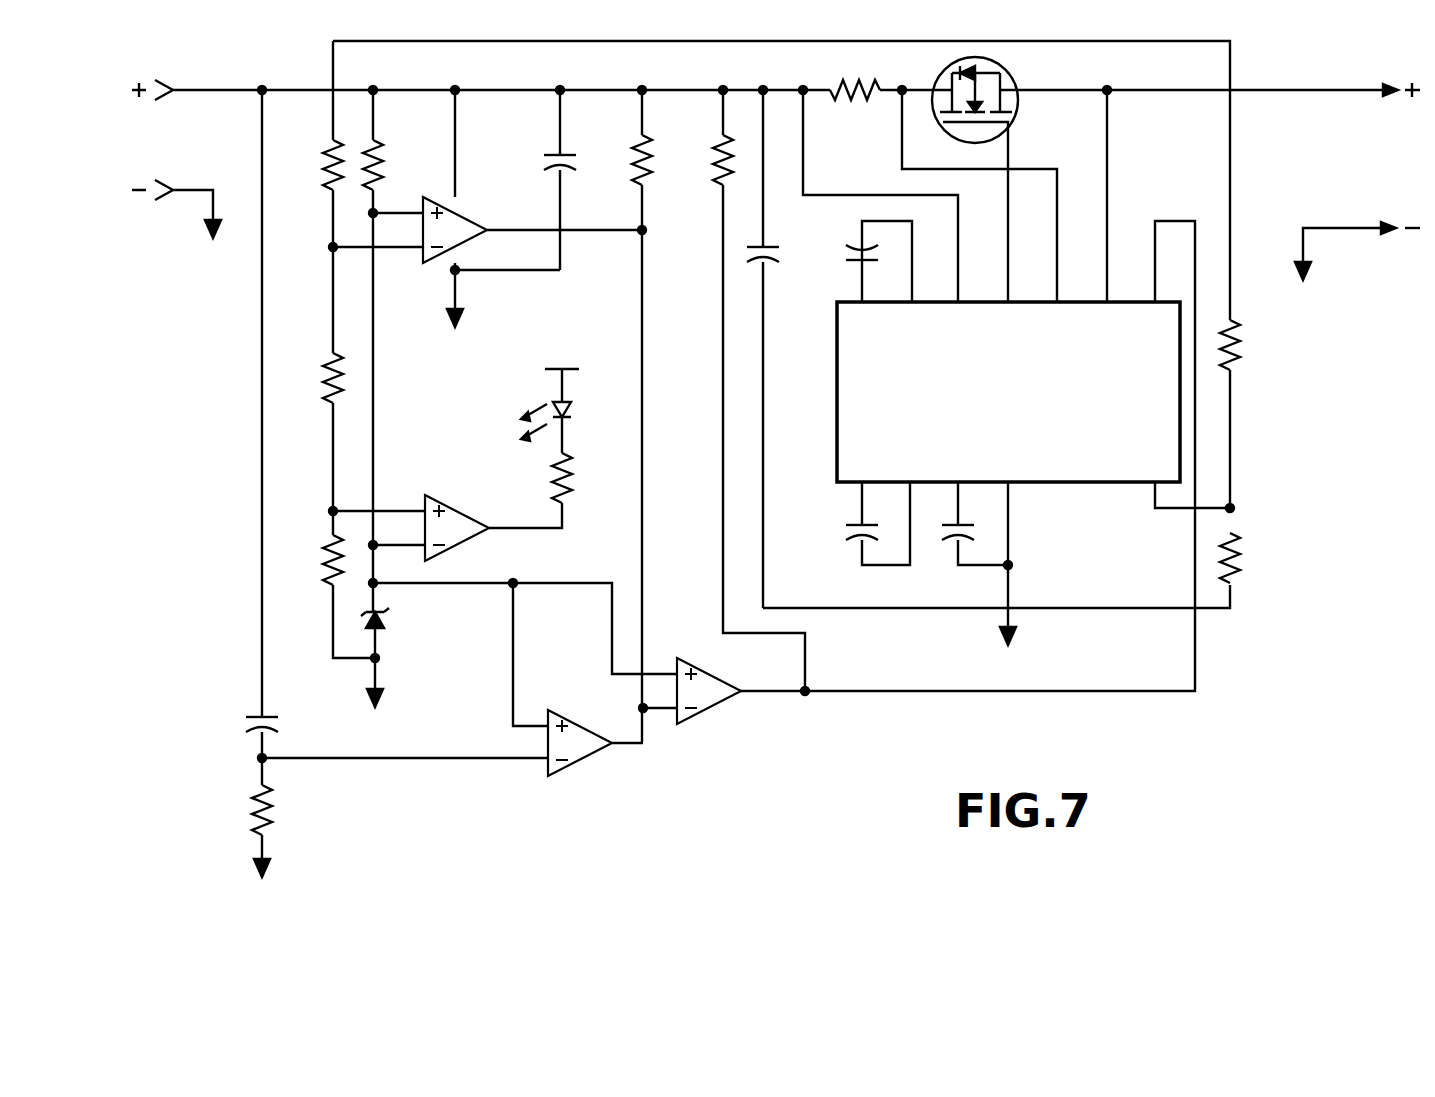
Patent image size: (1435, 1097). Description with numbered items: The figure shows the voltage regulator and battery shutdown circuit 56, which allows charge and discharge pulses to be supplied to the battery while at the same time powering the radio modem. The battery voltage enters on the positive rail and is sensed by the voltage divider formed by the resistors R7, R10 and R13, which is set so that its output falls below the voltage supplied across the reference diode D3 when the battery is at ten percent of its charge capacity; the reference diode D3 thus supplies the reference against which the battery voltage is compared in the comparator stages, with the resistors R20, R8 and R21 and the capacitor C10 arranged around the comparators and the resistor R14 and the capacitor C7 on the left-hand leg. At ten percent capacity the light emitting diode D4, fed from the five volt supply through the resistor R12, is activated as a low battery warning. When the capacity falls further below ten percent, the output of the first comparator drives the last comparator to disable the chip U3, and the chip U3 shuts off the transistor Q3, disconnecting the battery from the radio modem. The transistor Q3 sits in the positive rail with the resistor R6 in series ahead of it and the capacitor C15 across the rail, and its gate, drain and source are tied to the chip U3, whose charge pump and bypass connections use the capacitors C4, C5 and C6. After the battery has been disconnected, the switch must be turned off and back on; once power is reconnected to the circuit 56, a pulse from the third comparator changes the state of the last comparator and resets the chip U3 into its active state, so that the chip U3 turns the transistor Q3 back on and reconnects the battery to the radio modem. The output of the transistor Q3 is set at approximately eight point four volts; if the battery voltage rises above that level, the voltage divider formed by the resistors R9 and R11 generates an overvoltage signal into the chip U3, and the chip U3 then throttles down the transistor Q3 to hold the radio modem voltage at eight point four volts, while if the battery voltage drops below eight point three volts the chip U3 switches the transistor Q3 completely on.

The voltage regulator and battery shutdown circuit 56 is at (777, 474).
The resistor R6 is at (855, 78).
The voltage divider resistor R7 is at (315, 165).
The resistor R8 is at (624, 160).
The voltage divider resistor R9 is at (1246, 345).
The voltage divider resistor R10 is at (310, 378).
The voltage divider resistor R11 is at (1253, 558).
The resistor R12 is at (585, 478).
The voltage divider resistor R13 is at (310, 560).
The resistor R14 is at (239, 810).
The resistor R20 is at (395, 165).
The resistor R21 is at (697, 160).
The capacitor C4 is at (850, 267).
The capacitor C5 is at (851, 519).
The capacitor C6 is at (969, 519).
The capacitor C7 is at (243, 727).
The capacitor C10 is at (534, 165).
The capacitor C15 is at (780, 241).
The reference diode D3 is at (391, 621).
The light emitting diode D4 is at (598, 422).
The transistor Q3 is at (1013, 179).
The chip U3 is at (1008, 421).